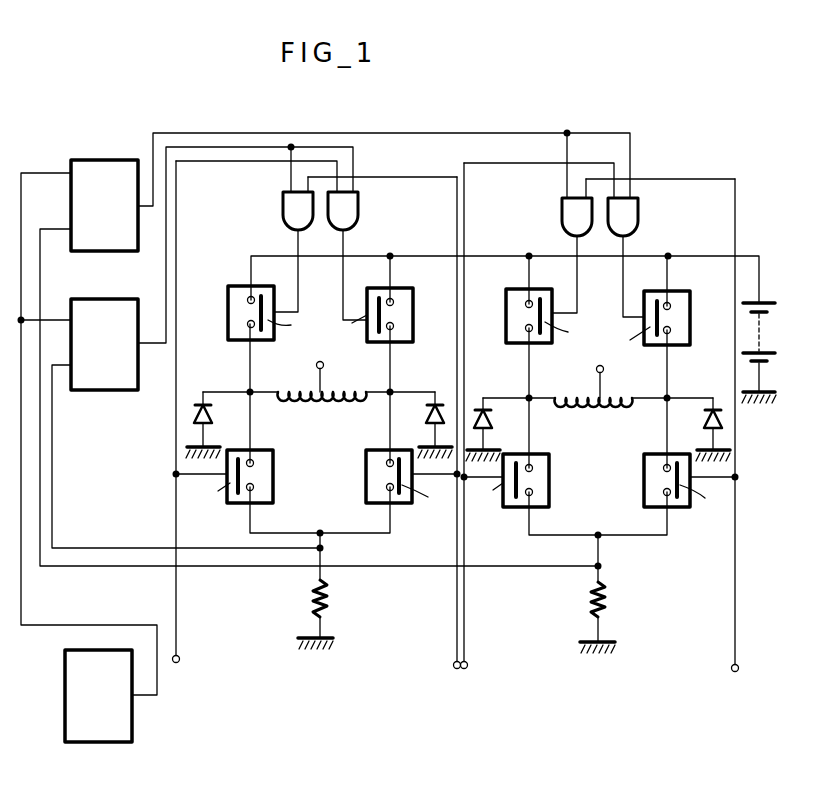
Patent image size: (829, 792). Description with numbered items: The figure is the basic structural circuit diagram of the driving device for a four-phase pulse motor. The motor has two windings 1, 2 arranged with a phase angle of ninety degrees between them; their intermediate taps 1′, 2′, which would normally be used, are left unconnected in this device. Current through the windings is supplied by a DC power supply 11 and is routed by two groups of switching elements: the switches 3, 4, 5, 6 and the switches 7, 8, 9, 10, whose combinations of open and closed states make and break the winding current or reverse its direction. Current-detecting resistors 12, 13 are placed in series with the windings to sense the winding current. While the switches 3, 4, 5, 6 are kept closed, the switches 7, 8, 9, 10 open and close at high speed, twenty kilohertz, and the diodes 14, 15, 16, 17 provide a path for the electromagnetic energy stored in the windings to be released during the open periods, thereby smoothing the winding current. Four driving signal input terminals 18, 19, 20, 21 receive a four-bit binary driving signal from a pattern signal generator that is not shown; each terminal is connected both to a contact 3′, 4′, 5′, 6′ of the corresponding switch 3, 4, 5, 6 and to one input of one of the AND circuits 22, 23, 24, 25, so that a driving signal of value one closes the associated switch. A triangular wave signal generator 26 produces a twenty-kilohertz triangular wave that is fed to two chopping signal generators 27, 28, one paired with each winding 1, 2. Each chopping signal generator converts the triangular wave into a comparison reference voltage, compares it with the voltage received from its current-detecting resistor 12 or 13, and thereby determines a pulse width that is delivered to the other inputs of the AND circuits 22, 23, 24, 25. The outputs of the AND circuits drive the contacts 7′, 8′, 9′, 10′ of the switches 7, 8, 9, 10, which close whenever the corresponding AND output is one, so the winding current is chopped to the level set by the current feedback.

The winding 1 is at (319, 409).
The intermediate tap 1′ is at (324, 366).
The winding 2 is at (598, 418).
The intermediate tap 2′ is at (604, 370).
The switching element 3 is at (275, 467).
The contact 3′ is at (212, 500).
The switching element 4 is at (372, 467).
The contact 4′ is at (426, 501).
The switching element 5 is at (553, 472).
The contact 5′ is at (489, 502).
The switching element 6 is at (652, 465).
The contact 6′ is at (703, 503).
The switching element 7 is at (236, 307).
The contact 7′ is at (291, 330).
The switching element 8 is at (408, 308).
The contact 8′ is at (349, 330).
The switching element 9 is at (512, 302).
The contact 9′ is at (569, 333).
The switching element 10 is at (690, 320).
The contact 10′ is at (624, 344).
The DC power supply 11 is at (776, 353).
The resistor 12 is at (330, 591).
The resistor 13 is at (610, 594).
The diode 14 is at (218, 425).
The diode 15 is at (424, 425).
The diode 16 is at (498, 429).
The diode 17 is at (703, 429).
The driving signal input terminal 18 is at (194, 417).
The driving signal input terminal 19 is at (442, 428).
The driving signal input terminal 20 is at (483, 421).
The driving signal input terminal 21 is at (726, 431).
The AND circuit 22 is at (350, 208).
The AND circuit 23 is at (283, 206).
The AND circuit 24 is at (630, 214).
The AND circuit 25 is at (562, 211).
The triangular wave signal generator 26 is at (118, 713).
The chopping signal generator 27 is at (100, 300).
The chopping signal generator 28 is at (103, 160).